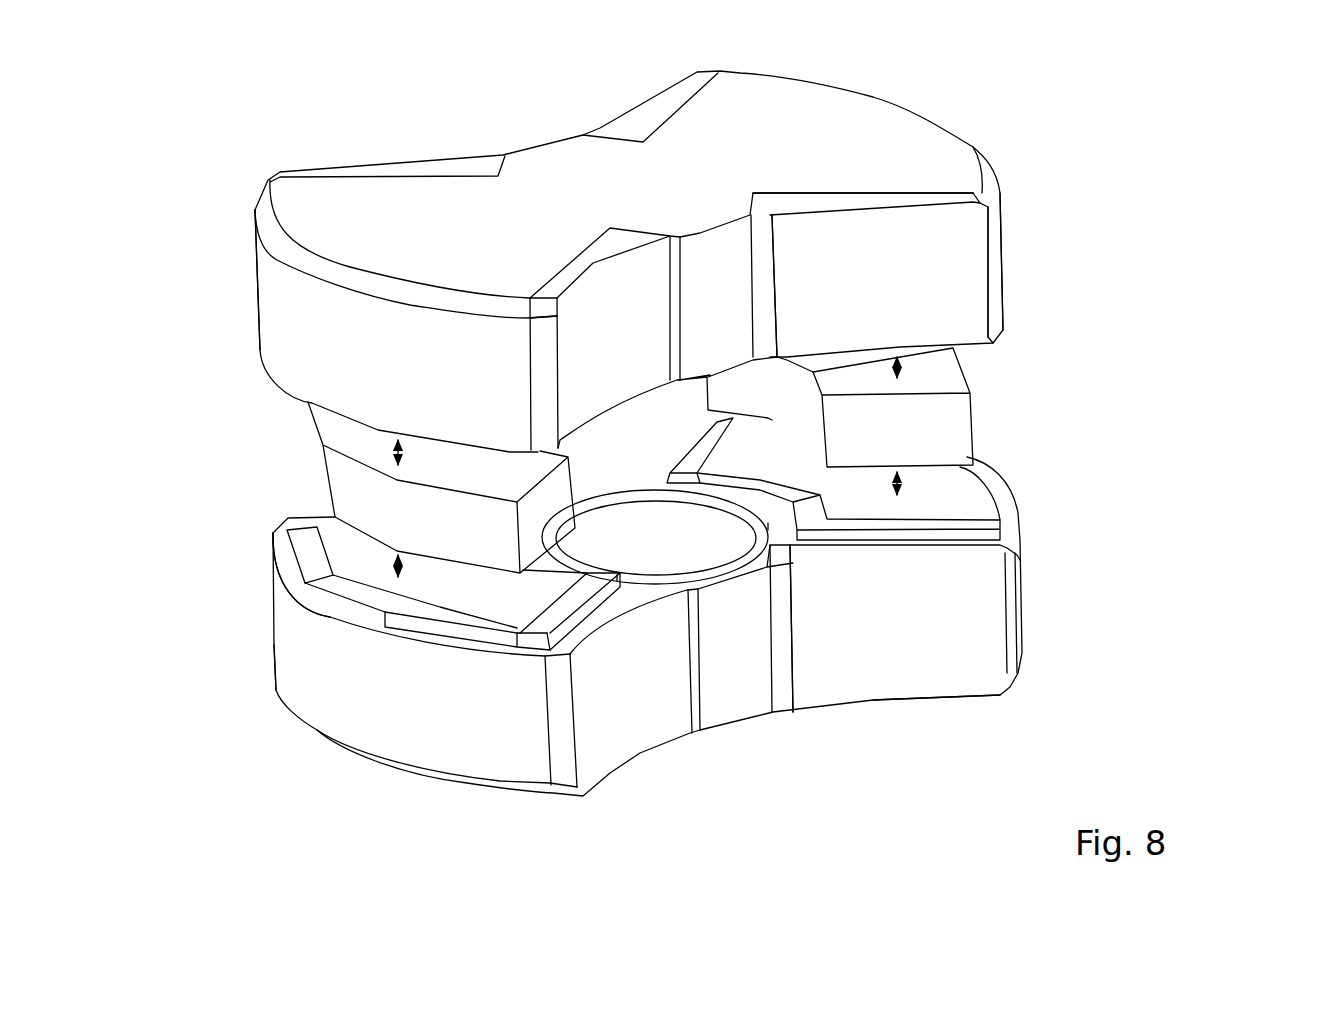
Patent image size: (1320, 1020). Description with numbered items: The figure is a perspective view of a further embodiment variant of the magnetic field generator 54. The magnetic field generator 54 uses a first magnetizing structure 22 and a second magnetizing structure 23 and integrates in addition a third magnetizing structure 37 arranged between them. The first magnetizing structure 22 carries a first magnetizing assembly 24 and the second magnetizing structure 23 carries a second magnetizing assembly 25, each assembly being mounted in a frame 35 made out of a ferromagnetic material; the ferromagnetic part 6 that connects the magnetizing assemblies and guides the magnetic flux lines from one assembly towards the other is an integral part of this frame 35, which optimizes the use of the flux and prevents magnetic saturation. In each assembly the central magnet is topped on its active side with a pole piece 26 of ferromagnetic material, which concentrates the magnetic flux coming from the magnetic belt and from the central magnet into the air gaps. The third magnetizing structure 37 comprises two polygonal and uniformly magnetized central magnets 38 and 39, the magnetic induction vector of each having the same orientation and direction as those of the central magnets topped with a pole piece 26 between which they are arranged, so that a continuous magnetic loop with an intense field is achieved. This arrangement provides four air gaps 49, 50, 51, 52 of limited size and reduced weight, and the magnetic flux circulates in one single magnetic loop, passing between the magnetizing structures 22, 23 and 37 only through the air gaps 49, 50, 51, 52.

The ferromagnetic part 6 is at (730, 642).
The first magnetizing structure 22 is at (1100, 637).
The second magnetizing structure 23 is at (1072, 203).
The first magnetizing assembly 24 is at (980, 118).
The second magnetizing assembly 25 is at (243, 262).
The pole piece 26 is at (367, 575).
The frame 35 is at (850, 135).
The third magnetizing structure 37 is at (1052, 425).
The central magnet 38 is at (325, 473).
The central magnet 39 is at (940, 412).
The air gap 49 is at (390, 553).
The air gap 50 is at (955, 490).
The air gap 51 is at (308, 417).
The air gap 52 is at (955, 365).
The magnetic field generator 54 is at (1210, 132).